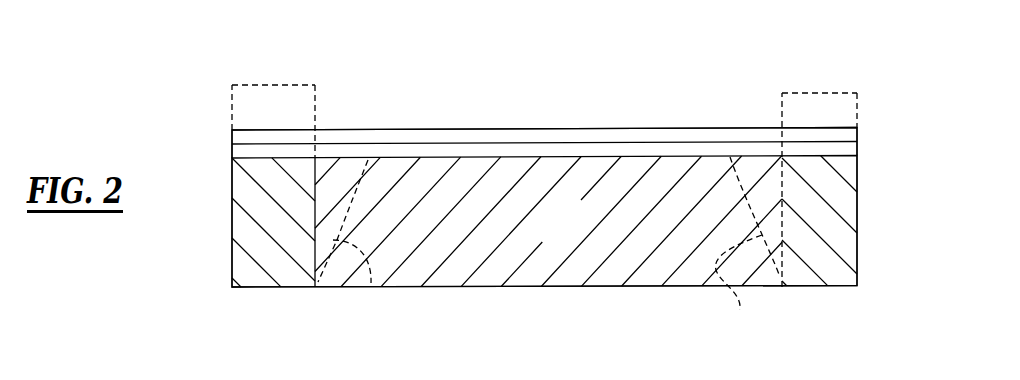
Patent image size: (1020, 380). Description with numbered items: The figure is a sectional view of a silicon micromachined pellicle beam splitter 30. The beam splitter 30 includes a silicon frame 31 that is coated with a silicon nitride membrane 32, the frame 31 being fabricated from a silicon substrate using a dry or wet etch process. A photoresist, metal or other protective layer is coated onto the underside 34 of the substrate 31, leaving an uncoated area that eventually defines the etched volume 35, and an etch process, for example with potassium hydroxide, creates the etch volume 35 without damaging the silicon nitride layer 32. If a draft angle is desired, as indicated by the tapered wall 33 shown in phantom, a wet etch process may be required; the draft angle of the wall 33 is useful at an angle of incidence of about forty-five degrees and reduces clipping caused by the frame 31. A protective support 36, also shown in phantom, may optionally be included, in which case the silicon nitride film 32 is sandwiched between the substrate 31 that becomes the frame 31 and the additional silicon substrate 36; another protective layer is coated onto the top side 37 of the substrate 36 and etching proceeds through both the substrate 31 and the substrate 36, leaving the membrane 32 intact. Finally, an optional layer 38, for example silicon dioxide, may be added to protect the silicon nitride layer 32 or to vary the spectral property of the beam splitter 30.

The beam splitter 30 is at (717, 80).
The silicon frame 31 is at (860, 205).
The silicon nitride membrane 32 is at (655, 150).
The tapered wall 33 is at (371, 283).
The underside 34 is at (263, 288).
The etched volume 35 is at (575, 231).
The protective support 36 is at (293, 110).
The top side 37 is at (247, 85).
The optional layer 38 is at (513, 138).